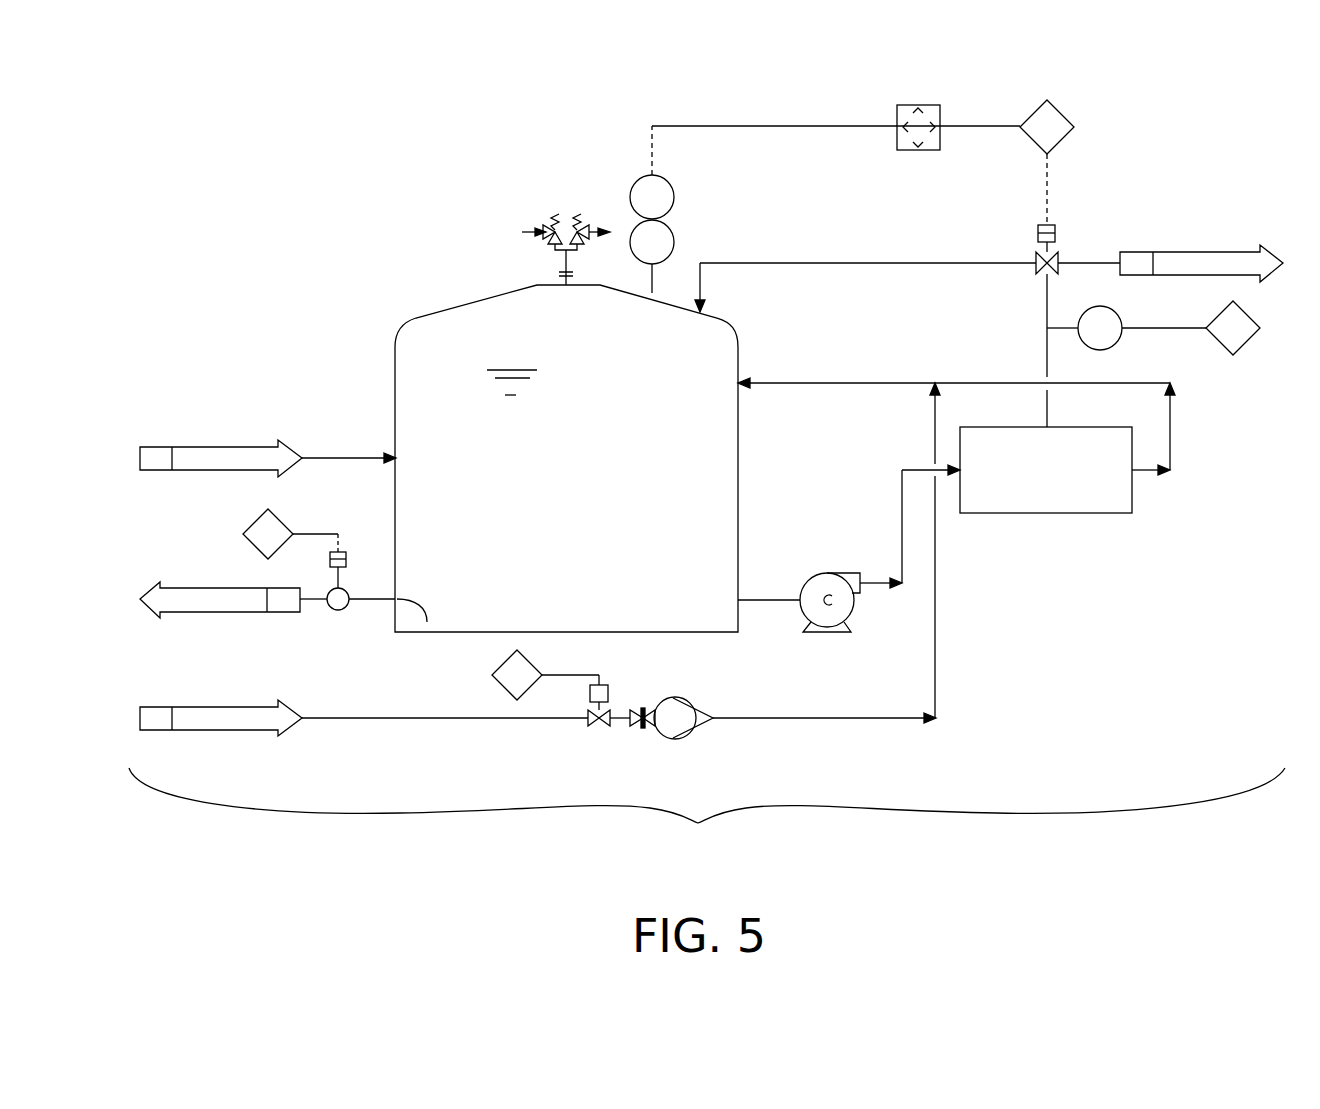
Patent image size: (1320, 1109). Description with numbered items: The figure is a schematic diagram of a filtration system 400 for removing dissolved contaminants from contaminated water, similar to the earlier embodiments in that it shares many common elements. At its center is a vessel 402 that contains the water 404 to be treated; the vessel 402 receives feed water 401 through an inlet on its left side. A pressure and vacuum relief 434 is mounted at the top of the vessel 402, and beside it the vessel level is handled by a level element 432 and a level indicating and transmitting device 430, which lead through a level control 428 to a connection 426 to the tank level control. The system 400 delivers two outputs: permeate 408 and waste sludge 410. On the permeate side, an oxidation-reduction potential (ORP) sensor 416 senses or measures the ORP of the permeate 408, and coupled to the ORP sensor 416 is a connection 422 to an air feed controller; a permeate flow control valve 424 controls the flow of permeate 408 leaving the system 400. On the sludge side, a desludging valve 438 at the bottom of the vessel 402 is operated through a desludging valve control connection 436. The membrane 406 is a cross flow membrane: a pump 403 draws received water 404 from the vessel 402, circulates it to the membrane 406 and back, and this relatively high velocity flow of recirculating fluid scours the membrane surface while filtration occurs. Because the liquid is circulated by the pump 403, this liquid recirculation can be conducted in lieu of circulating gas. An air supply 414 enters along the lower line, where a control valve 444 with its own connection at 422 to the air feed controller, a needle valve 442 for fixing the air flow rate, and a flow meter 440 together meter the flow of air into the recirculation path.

The filtration system 400 is at (707, 811).
The feed water 401 is at (221, 458).
The vessel 402 is at (667, 632).
The pump 403 is at (826, 632).
The water 404 is at (497, 385).
The membrane 406 is at (1028, 483).
The permeate 408 is at (1201, 263).
The waste sludge 410 is at (220, 600).
The air supply 414 is at (221, 718).
The oxidation-reduction potential (ORP) sensor 416 is at (1100, 328).
The connection to air feed controller 422 is at (876, 500).
The permeate flow control valve 424 is at (1052, 254).
The connection to tank level control 426 is at (1047, 127).
The level control 428 is at (904, 150).
The level indicating and transmitting device 430 is at (652, 197).
The level element 432 is at (652, 242).
The pressure and vacuum relief 434 is at (617, 213).
The desludging valve control connection 436 is at (268, 534).
The desludging valve 438 is at (346, 560).
The flow meter 440 is at (683, 718).
The needle valve 442 is at (648, 738).
The control valve 444 is at (608, 696).